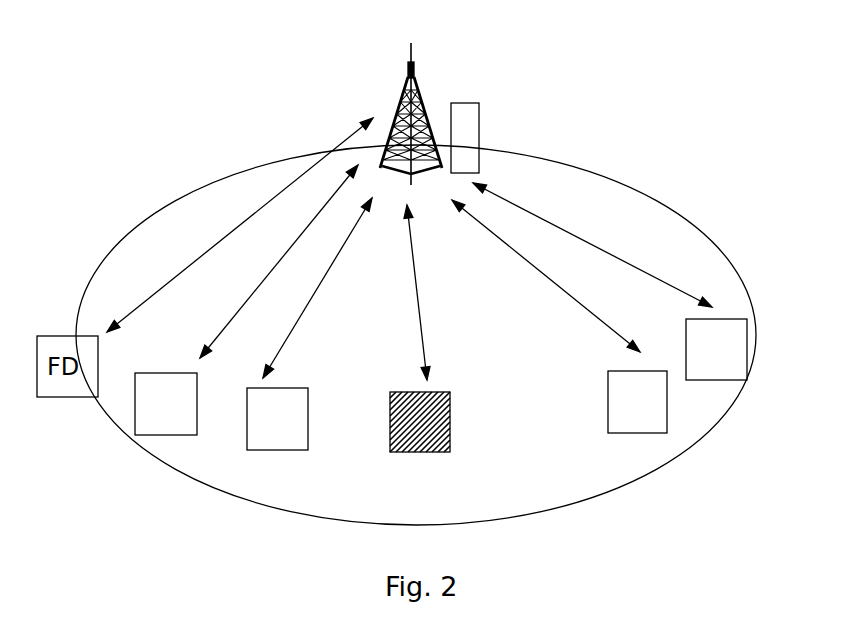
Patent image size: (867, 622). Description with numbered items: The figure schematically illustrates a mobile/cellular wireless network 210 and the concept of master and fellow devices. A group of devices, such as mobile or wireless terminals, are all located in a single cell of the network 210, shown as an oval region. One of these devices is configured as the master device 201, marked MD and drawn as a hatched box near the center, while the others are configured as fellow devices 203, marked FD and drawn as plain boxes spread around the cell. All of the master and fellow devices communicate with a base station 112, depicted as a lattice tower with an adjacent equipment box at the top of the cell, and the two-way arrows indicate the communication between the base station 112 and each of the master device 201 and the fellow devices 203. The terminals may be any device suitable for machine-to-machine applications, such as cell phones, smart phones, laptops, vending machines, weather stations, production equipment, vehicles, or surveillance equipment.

The mobile/cellular wireless network 210 is at (281, 87).
The base station 112 is at (414, 87).
The fellow devices 203 is at (245, 437).
The master device 201 is at (405, 452).